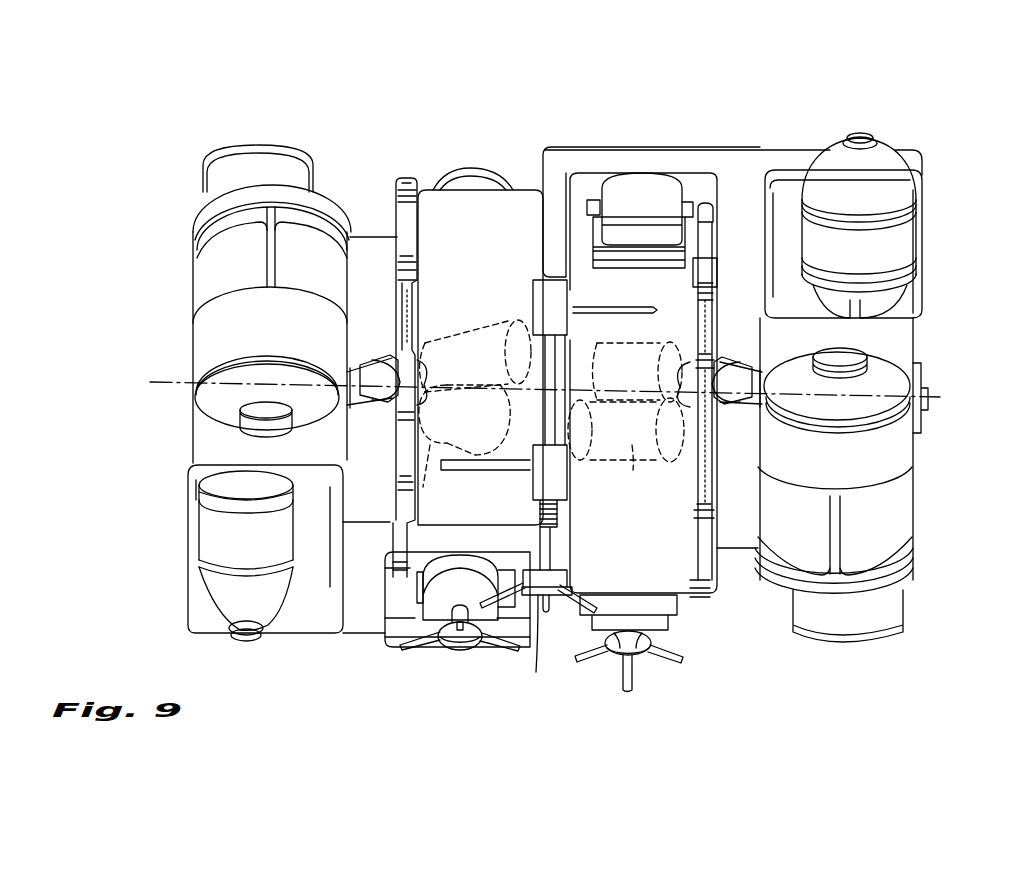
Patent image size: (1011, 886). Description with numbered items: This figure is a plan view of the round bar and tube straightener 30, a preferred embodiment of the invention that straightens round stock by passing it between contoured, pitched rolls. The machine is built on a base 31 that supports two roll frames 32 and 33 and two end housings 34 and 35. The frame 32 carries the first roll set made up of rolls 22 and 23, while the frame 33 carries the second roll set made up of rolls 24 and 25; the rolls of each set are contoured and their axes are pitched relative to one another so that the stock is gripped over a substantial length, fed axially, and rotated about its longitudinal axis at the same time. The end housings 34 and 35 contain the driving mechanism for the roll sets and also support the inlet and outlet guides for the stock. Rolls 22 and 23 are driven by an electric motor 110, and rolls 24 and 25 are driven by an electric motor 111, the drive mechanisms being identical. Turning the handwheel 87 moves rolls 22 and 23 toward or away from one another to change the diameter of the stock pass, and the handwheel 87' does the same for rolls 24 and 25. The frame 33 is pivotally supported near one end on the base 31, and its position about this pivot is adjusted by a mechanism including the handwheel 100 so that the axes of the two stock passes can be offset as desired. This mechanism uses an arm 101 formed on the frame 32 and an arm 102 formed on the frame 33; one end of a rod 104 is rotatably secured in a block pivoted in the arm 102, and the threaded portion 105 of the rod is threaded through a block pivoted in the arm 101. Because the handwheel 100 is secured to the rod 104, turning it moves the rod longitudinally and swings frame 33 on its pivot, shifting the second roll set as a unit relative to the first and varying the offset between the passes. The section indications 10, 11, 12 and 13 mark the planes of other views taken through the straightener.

The section line 10- 10 is at (947, 716).
The section line 11- 11 is at (988, 397).
The section line 12- 12 is at (396, 702).
The section line 13- 13 is at (590, 708).
The roll 22 is at (485, 343).
The roll 23 is at (464, 443).
The roll 24 is at (675, 345).
The roll 25 is at (626, 443).
The round bar and tube straightener 30 is at (172, 508).
The base 31 is at (305, 632).
The roll frame 32 is at (512, 200).
The roll frame 33 is at (667, 583).
The end housing 34 is at (190, 440).
The end housing 35 is at (910, 335).
The handwheel 87 is at (460, 617).
The handwheel 87' is at (649, 664).
The handwheel 100 is at (537, 640).
The arm 101 is at (555, 480).
The arm 102 is at (545, 300).
The rod 104 is at (560, 355).
The threaded portion 105 is at (560, 510).
The electric motor 110 is at (222, 540).
The electric motor 111 is at (895, 235).